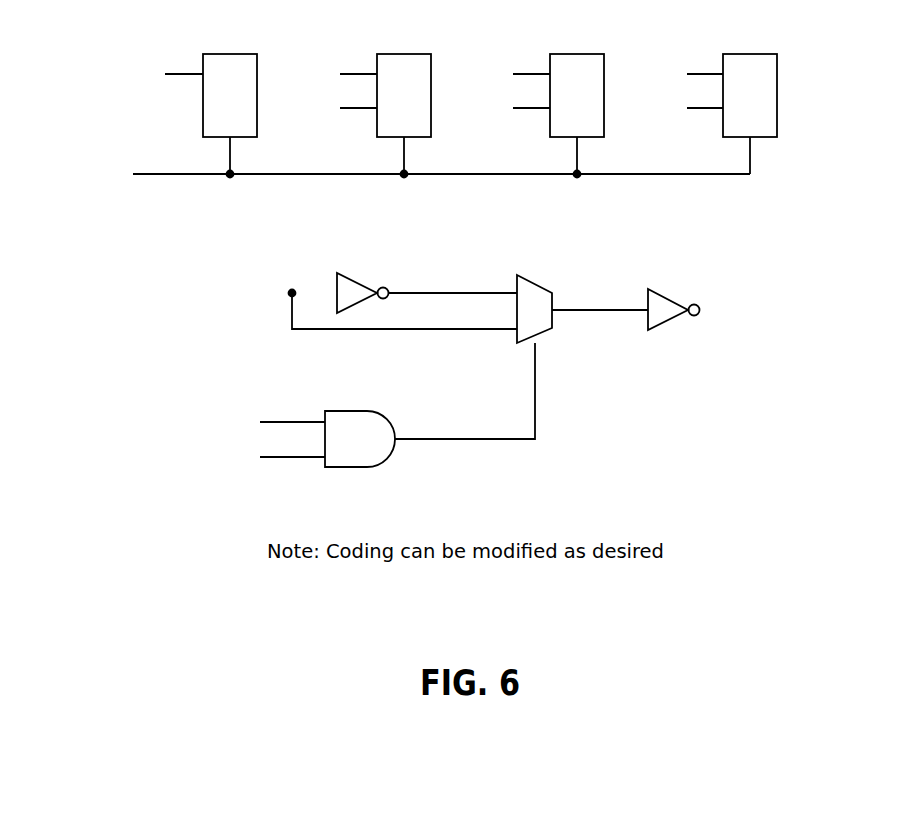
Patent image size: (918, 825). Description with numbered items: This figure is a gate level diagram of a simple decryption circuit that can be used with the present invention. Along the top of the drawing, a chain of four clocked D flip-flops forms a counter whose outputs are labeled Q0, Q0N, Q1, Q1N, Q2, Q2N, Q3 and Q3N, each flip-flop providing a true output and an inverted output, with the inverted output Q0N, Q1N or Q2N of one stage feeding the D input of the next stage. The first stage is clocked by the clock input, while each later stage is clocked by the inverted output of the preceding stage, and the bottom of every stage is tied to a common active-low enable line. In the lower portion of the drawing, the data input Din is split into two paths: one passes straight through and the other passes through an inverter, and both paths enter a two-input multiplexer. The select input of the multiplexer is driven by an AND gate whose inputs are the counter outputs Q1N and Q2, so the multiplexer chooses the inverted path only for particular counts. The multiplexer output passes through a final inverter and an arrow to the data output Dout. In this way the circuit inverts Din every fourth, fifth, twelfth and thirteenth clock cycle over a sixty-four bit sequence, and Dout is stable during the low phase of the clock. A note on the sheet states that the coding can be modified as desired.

The first flip-flop output Q0 is at (292, 74).
The first flip-flop inverted output Q0N is at (292, 108).
The second flip-flop output Q1 is at (465, 74).
The second flip-flop inverted output Q1N is at (465, 108).
The third flip-flop output Q2 is at (638, 74).
The third flip-flop inverted output Q2N is at (638, 108).
The fourth flip-flop output Q3 is at (812, 74).
The fourth flip-flop inverted output Q3N is at (812, 108).
The data input Din is at (337, 293).
The data output Dout is at (700, 310).